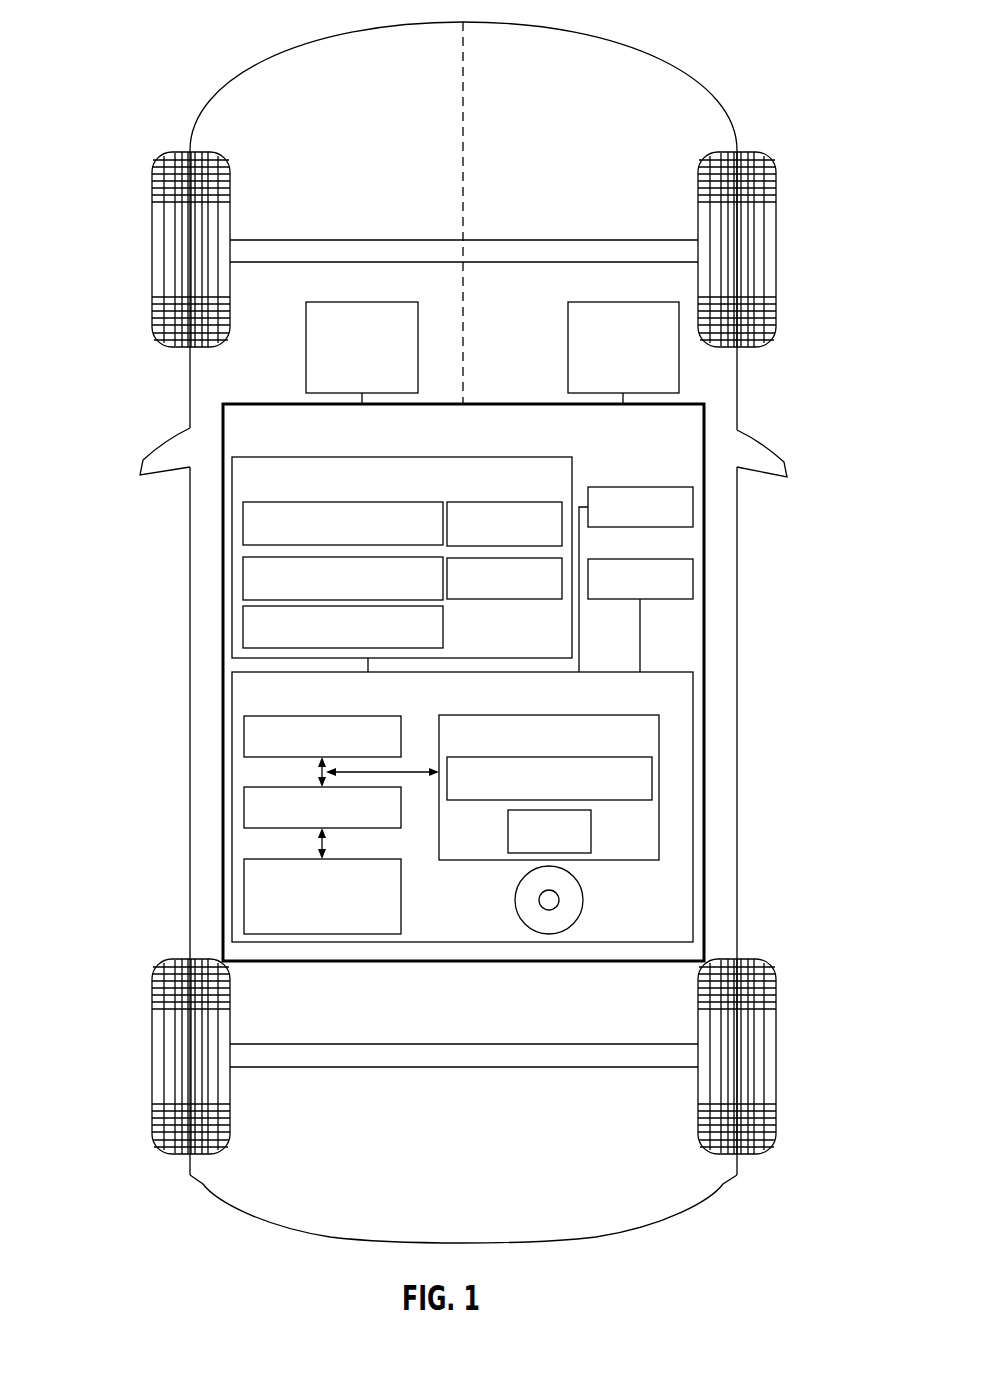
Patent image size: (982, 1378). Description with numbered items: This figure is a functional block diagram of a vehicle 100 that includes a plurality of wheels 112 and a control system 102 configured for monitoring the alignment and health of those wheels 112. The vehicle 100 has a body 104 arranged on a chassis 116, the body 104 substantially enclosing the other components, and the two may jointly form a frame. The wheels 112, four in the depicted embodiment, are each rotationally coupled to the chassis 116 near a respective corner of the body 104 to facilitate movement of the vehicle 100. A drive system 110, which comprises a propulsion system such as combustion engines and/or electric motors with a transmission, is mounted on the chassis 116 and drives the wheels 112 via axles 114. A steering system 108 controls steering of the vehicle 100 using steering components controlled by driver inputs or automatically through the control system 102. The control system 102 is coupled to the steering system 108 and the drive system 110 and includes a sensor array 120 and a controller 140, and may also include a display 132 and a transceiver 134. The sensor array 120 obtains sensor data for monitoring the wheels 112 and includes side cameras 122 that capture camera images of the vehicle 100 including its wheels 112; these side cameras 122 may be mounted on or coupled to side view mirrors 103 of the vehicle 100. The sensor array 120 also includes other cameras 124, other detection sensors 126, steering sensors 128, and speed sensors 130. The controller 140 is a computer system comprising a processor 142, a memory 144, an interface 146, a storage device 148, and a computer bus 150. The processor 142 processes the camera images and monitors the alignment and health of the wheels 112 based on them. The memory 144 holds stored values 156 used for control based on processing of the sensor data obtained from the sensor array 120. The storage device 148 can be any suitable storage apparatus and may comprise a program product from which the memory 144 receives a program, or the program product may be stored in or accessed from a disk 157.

The vehicle 100 is at (399, 625).
The control system 102 is at (707, 427).
The side view mirrors 103 is at (153, 462).
The body 104 is at (197, 497).
The steering system 108 is at (363, 302).
The drive system 110 is at (623, 302).
The wheels 112 is at (151, 250).
The axles 114 is at (553, 250).
The chassis 116 is at (472, 104).
The sensor array 120 is at (309, 456).
The side cameras 122 is at (243, 520).
The other cameras 124 is at (243, 568).
The other detection sensors 126 is at (243, 619).
The steering sensors 128 is at (498, 502).
The speed sensors 130 is at (493, 599).
The display 132 is at (693, 505).
The transceiver 134 is at (693, 568).
The controller 140 is at (670, 688).
The processor 142 is at (244, 740).
The memory 144 is at (660, 728).
The interface 146 is at (244, 808).
The storage device 148 is at (244, 890).
The computer bus 150 is at (322, 773).
The stored values 156 is at (591, 843).
The disk 157 is at (549, 934).